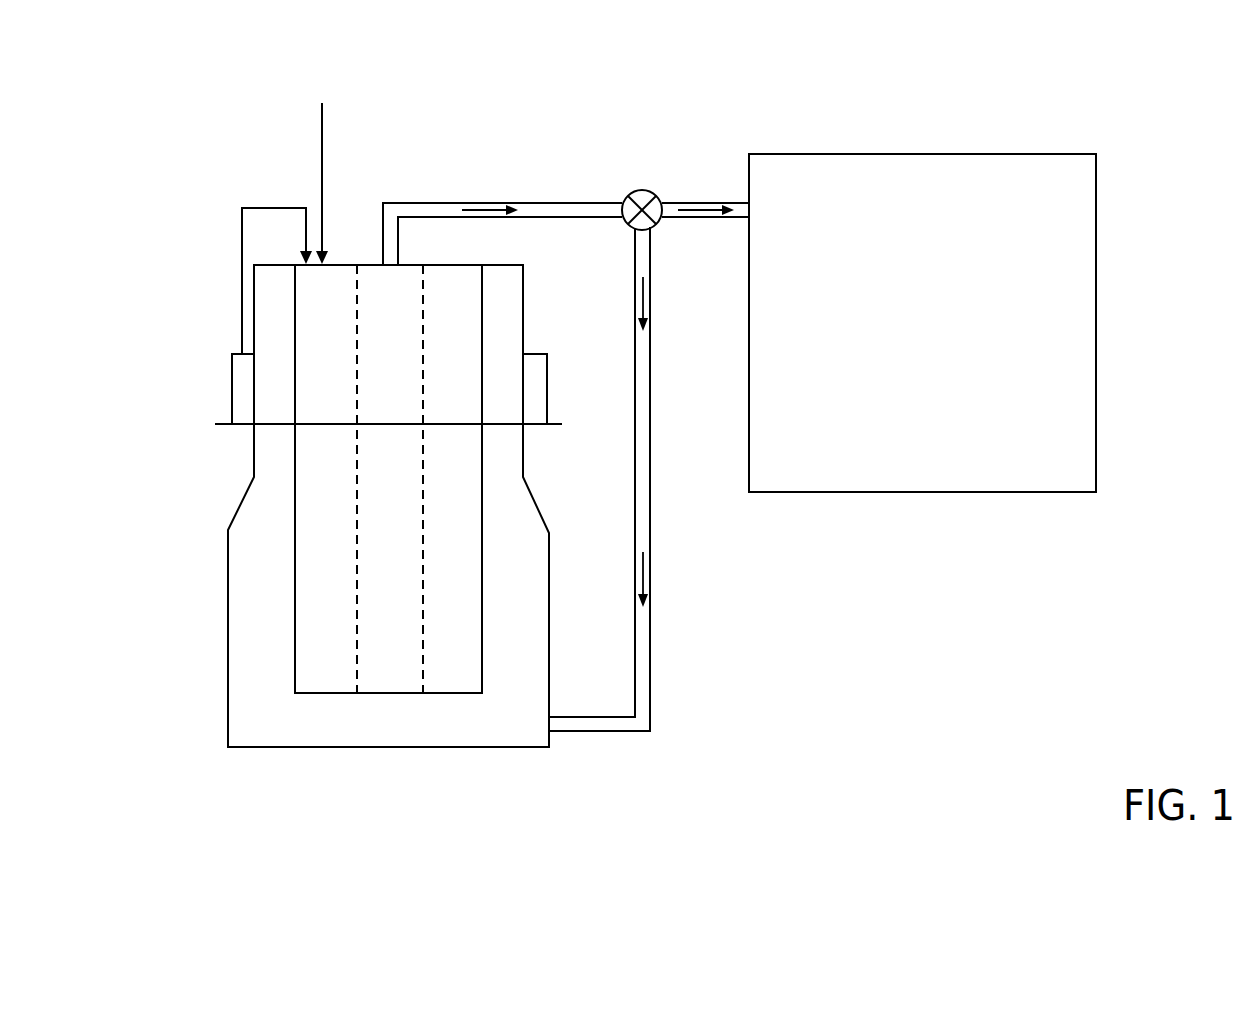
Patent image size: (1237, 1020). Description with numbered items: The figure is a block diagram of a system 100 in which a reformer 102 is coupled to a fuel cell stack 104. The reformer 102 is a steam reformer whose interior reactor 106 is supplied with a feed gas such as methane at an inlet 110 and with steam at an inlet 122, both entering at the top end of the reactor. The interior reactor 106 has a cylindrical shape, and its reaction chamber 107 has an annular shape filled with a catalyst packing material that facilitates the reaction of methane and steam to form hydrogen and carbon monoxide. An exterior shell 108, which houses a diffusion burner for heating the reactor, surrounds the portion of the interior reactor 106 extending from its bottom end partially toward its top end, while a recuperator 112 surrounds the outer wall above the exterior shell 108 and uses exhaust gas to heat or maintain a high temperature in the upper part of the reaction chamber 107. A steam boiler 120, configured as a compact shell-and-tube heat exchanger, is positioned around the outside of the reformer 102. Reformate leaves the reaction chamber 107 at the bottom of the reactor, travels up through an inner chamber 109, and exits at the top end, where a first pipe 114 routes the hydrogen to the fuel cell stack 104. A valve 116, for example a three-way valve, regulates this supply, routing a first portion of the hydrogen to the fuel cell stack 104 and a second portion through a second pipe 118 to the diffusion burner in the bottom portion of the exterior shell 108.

The system 100 is at (675, 58).
The reformer 102 is at (245, 158).
The fuel cell stack 104 is at (940, 349).
The interior reactor 106 is at (295, 527).
The reaction chamber 107 is at (345, 498).
The exterior shell 108 is at (228, 653).
The inner chamber 109 is at (408, 431).
The inlet 110 is at (322, 188).
The recuperator 112 is at (523, 308).
The first pipe 114 is at (515, 200).
The valve 116 is at (642, 190).
The second pipe 118 is at (650, 445).
The steam boiler 120 is at (231, 395).
The inlet 122 is at (241, 303).